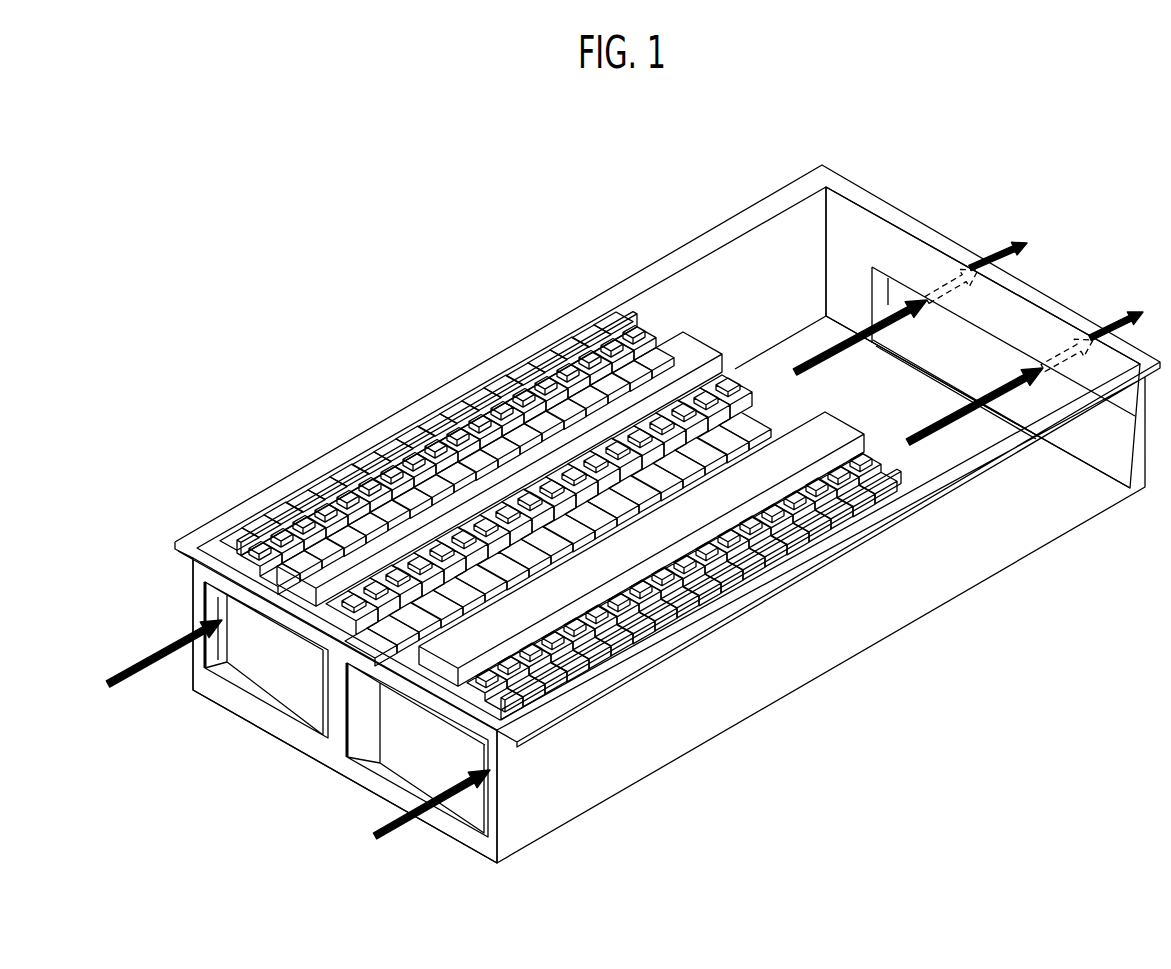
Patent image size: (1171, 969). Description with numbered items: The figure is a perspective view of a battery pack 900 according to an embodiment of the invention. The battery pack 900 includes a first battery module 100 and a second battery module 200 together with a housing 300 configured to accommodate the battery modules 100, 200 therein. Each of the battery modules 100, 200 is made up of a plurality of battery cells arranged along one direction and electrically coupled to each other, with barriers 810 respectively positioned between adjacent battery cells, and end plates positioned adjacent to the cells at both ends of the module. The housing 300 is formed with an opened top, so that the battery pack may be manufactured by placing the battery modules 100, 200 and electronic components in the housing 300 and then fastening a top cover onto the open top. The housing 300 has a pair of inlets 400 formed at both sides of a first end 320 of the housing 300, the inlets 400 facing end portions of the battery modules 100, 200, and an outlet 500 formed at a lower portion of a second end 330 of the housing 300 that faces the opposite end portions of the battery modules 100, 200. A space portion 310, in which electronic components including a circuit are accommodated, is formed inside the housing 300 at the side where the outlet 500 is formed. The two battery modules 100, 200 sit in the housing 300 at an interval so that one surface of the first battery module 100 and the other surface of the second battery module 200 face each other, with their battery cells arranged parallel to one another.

The battery pack 900 is at (478, 248).
The housing 300 is at (777, 232).
The second end 330 is at (870, 200).
The first end 320 is at (178, 548).
The space portion 310 is at (774, 356).
The inlets 400 is at (490, 828).
The outlet 500 is at (957, 344).
The first battery module 100 is at (463, 480).
The barriers 810 is at (365, 480).
The second battery module 200 is at (623, 553).